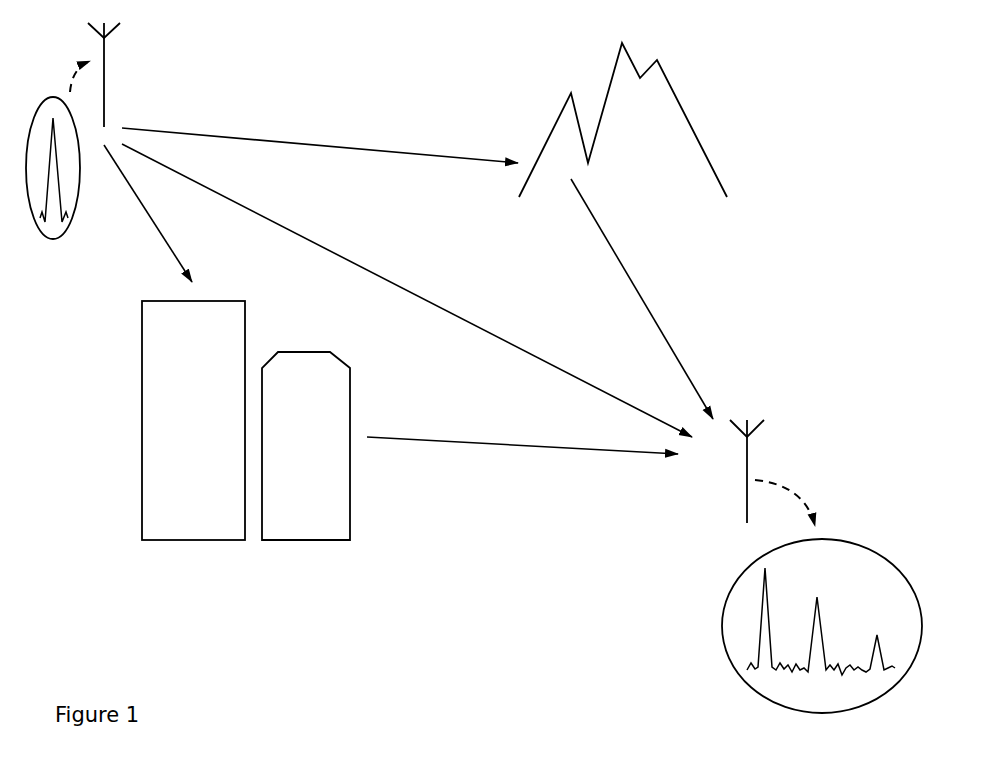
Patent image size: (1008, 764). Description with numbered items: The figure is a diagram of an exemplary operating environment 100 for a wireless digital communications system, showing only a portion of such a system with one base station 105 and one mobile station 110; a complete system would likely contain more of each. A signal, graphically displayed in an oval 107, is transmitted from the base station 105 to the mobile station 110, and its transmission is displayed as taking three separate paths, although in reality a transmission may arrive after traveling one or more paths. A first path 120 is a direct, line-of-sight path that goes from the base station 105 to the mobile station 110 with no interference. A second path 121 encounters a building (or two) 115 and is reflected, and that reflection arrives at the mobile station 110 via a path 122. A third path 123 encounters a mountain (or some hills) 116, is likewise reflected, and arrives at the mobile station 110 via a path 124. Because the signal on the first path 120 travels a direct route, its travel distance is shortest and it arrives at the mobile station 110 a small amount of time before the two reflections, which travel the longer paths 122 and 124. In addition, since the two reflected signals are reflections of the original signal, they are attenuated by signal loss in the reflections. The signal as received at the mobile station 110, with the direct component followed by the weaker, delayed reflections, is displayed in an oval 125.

The operating environment 100 is at (797, 57).
The base station 105 is at (105, 92).
The signal 107 is at (72, 228).
The mobile station 110 is at (748, 473).
The building 115 is at (318, 540).
The mountain 116 is at (695, 128).
The first path 120 is at (290, 232).
The second path 121 is at (175, 253).
The path 122 is at (490, 443).
The third path 123 is at (290, 142).
The path 124 is at (605, 230).
The oval 125 is at (722, 627).